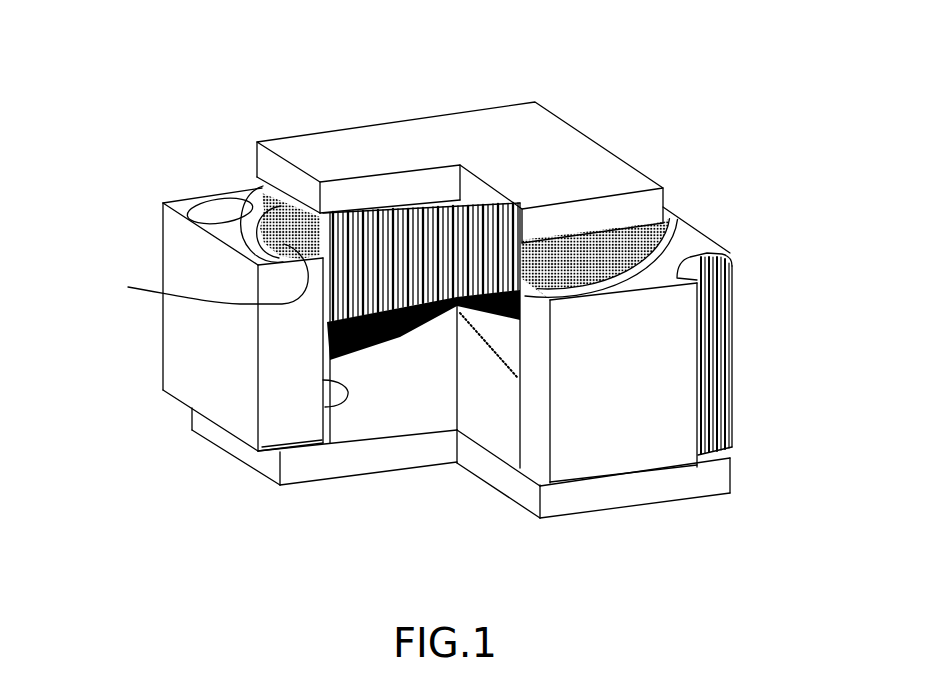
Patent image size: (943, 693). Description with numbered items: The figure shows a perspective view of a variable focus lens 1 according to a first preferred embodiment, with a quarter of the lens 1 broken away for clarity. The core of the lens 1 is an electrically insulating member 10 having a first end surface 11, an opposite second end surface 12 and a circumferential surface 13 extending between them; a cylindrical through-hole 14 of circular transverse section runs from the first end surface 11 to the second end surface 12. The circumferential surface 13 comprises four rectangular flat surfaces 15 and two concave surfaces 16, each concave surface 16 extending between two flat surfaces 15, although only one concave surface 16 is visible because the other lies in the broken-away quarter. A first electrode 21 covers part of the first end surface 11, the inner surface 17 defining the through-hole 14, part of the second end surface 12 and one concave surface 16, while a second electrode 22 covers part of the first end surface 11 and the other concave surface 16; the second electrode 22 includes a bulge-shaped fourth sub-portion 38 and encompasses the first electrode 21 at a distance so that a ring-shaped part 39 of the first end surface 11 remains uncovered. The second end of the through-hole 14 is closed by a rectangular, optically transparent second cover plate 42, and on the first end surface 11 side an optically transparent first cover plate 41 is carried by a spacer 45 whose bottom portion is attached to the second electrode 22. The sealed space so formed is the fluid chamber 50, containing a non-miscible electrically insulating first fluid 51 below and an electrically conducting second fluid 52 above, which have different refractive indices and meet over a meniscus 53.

The variable focus lens 1 is at (284, 83).
The electrically insulating member 10 is at (652, 380).
The first end surface 11 is at (690, 243).
The second end surface 12 is at (637, 477).
The circumferential surface 13 is at (672, 417).
The through-hole 14 is at (417, 363).
The flat surface 15 is at (653, 437).
The concave surface 16 is at (745, 331).
The inner surface 17 is at (330, 407).
The first electrode 21 is at (280, 196).
The second electrode 22 is at (666, 235).
The fourth sub-portion 38 is at (227, 207).
The uncovered part 39 is at (200, 274).
The first cover plate 41 is at (507, 128).
The second cover plate 42 is at (577, 498).
The spacer 45 is at (613, 227).
The fluid chamber 50 is at (471, 398).
The first fluid 51 is at (382, 378).
The second fluid 52 is at (418, 268).
The meniscus 53 is at (458, 277).